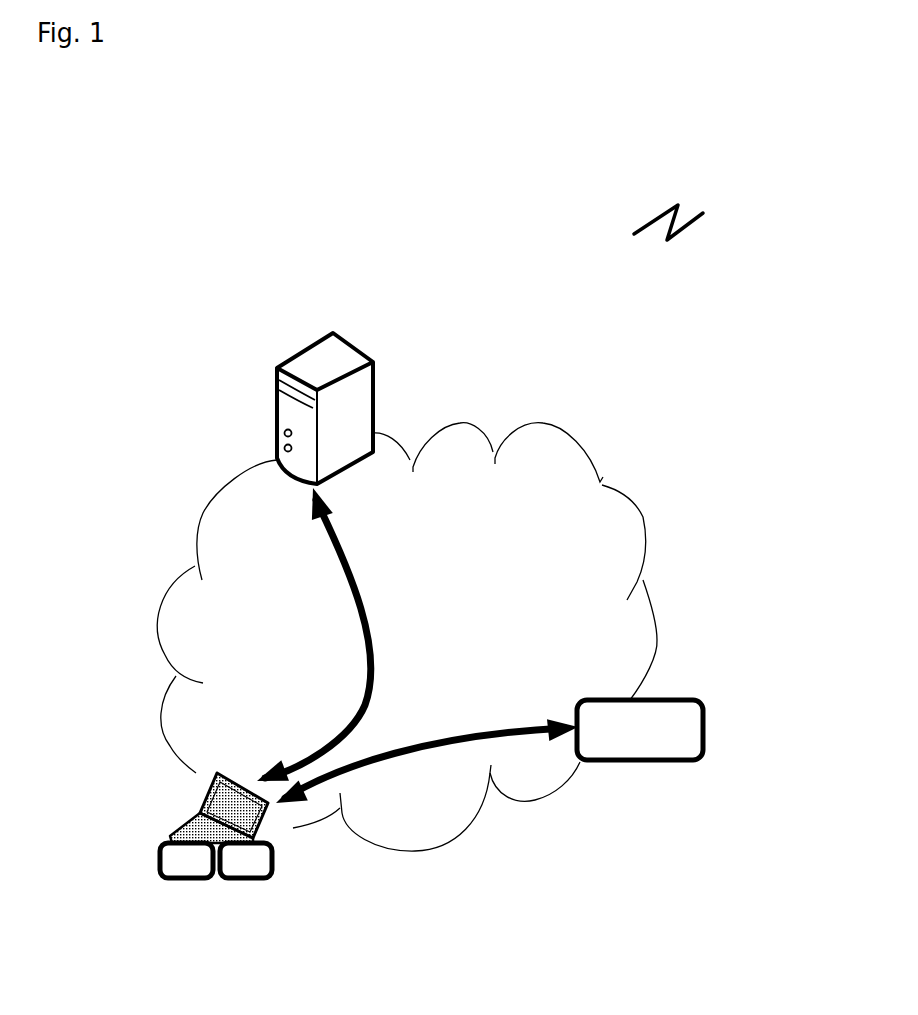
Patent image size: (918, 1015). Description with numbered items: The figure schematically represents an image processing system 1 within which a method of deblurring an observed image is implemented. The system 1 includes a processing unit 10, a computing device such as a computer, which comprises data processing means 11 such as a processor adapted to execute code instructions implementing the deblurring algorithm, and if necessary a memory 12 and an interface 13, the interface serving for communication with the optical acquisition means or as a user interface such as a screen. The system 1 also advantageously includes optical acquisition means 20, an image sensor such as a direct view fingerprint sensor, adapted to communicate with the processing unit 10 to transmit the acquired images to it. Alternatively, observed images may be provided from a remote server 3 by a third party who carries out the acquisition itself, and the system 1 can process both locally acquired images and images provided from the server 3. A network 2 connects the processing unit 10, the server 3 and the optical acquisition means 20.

The image processing system 1 is at (682, 208).
The network 2 is at (645, 515).
The remote server 3 is at (335, 328).
The processing unit 10 is at (195, 866).
The data processing means 11 is at (182, 883).
The memory 12 is at (260, 883).
The interface 13 is at (196, 816).
The optical acquisition means 20 is at (706, 719).